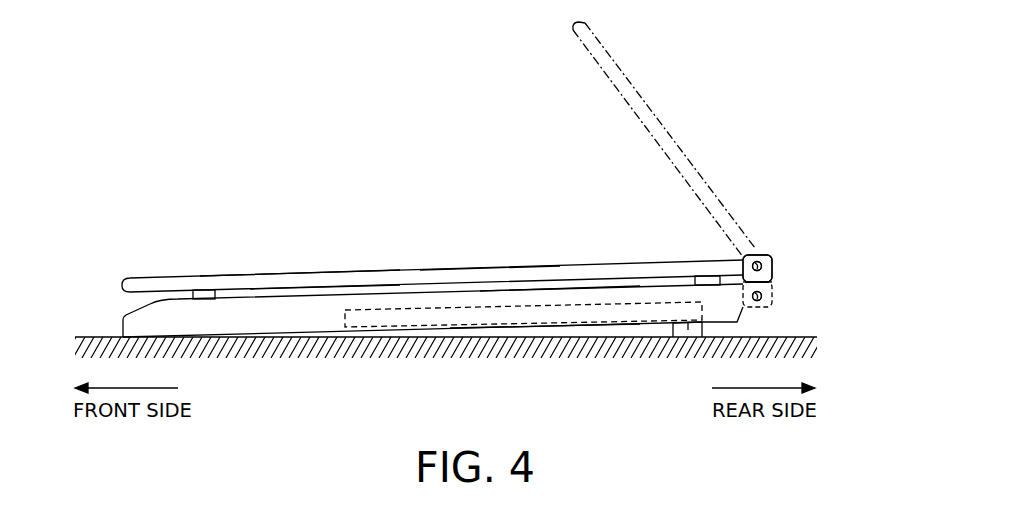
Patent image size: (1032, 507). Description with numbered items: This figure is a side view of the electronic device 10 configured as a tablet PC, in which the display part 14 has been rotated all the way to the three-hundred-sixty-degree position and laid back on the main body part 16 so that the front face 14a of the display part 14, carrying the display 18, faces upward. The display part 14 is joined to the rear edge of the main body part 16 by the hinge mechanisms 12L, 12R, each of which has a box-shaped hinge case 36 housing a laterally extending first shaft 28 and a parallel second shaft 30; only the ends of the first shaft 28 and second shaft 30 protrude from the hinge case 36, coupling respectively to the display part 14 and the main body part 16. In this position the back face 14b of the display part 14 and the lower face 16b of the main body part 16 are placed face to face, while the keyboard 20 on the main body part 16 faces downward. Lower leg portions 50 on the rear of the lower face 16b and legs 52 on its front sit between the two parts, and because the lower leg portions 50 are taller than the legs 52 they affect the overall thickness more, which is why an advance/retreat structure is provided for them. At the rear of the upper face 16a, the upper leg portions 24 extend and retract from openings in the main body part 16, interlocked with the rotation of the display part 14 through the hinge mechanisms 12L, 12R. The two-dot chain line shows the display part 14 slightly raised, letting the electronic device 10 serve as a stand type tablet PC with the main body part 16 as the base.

The electronic device 10 is at (247, 113).
The hinge mechanism 12R is at (778, 278).
The hinge mechanism 12L is at (757, 268).
The display part 14 is at (671, 129).
The front face of the display part 14a is at (277, 272).
The back face of the display part 14b is at (313, 289).
The main body part 16 is at (116, 307).
The upper face of the main body part 16a is at (545, 330).
The lower face of the main body part 16b is at (555, 287).
The display 18 is at (474, 269).
The keyboard 20 is at (455, 324).
The upper leg portions 24 is at (688, 338).
The first shaft 28 is at (758, 252).
The second shaft 30 is at (773, 307).
The hinge case 36 is at (773, 298).
The lower leg portions 50 is at (706, 277).
The legs 52 is at (207, 290).